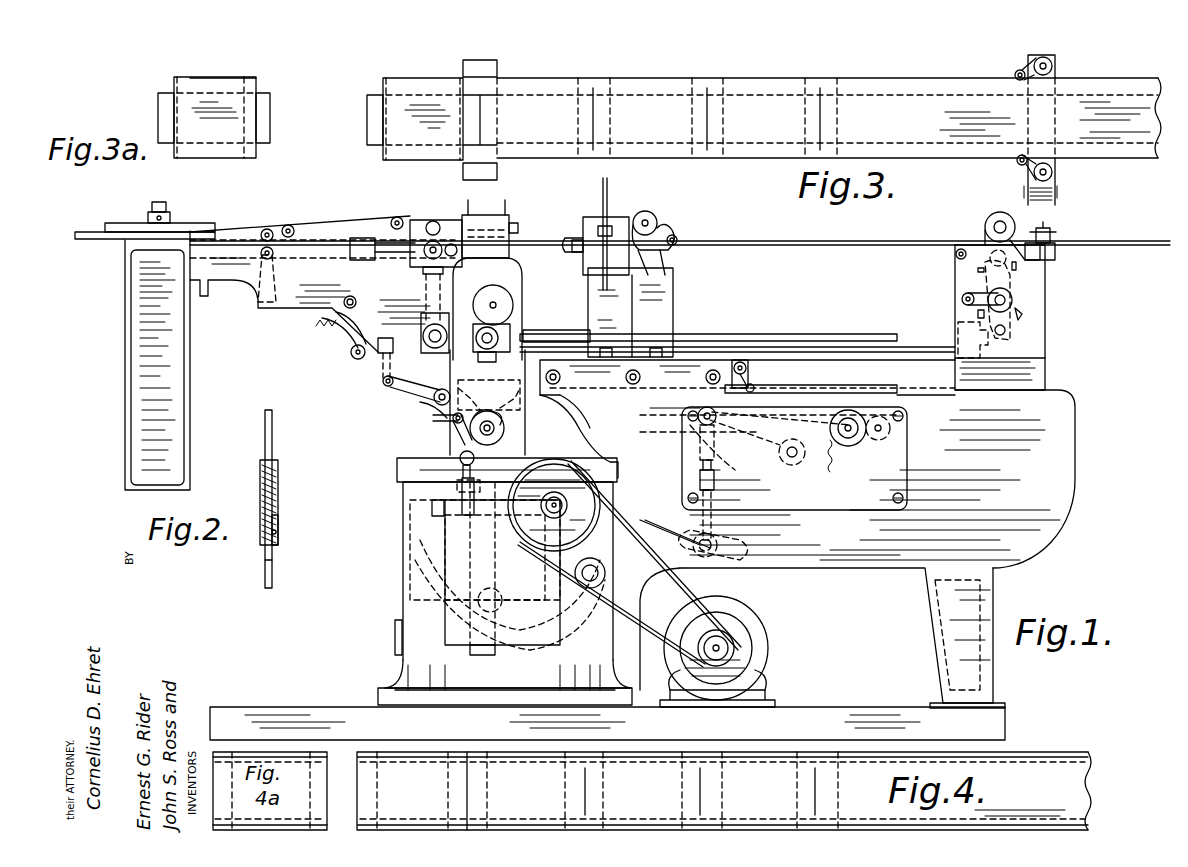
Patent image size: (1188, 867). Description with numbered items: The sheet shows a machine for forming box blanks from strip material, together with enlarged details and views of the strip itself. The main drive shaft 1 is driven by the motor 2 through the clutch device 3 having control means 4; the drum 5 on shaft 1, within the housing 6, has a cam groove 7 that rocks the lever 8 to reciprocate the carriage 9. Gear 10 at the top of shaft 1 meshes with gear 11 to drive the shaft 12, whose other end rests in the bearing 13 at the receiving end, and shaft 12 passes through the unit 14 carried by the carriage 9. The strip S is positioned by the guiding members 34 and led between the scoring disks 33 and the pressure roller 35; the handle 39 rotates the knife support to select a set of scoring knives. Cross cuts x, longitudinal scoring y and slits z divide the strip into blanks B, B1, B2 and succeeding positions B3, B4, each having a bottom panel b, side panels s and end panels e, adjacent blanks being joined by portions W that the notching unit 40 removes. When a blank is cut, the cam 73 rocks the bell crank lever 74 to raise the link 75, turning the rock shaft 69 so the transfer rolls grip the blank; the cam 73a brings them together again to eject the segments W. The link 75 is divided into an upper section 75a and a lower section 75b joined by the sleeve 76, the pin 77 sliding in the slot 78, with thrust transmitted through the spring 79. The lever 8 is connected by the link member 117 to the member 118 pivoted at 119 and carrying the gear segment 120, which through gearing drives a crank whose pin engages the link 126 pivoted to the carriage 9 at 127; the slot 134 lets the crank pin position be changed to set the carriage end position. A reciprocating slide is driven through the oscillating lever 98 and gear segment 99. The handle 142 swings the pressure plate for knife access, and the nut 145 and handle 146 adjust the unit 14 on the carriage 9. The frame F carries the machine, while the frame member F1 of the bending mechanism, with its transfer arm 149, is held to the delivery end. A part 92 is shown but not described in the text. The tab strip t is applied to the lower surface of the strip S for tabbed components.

In FIG. 1, the main drive shaft 1 is at (452, 468).
In FIG. 1, the motor 2 is at (760, 640).
In FIG. 1, the clutch device 3 is at (583, 520).
In FIG. 1, the control means 4 is at (462, 456).
In FIG. 1, the drum 5 is at (440, 530).
In FIG. 1, the housing 6 is at (420, 640).
In FIG. 1, the cam groove 7 is at (428, 567).
In FIG. 1, the lever 8 is at (705, 560).
In FIG. 1, the carriage 9 is at (700, 360).
In FIG. 1, the gear 10 is at (522, 336).
In FIG. 1, the gear 11 is at (500, 330).
In FIG. 1, the shaft 12 is at (805, 334).
In FIG. 1, the bearing 13 is at (958, 340).
In FIG. 1, the unit 14 is at (673, 300).
In FIG. 1, the disks 33 is at (990, 250).
In FIG. 3, the guiding members 34 is at (1014, 70).
In FIG. 1, the guiding members 34 is at (1056, 238).
In FIG. 1, the pressure roller 35 is at (985, 225).
In FIG. 1, the handle 39 is at (972, 300).
In FIG. 1, the unit 40 is at (515, 278).
In FIG. 1, the rock shaft 69 is at (433, 226).
In FIG. 1, the cam 73 is at (495, 440).
In FIG. 1, the cam 73a is at (505, 420).
In FIG. 1, the bell crank lever 74 is at (450, 423).
In FIG. 1, the link member 75 is at (415, 412).
In FIG. 2, the upper section 75a is at (272, 420).
In FIG. 2, the lower section 75b is at (272, 568).
In FIG. 2, the sleeve 76 is at (278, 502).
In FIG. 2, the pin 77 is at (276, 536).
In FIG. 2, the slot 78 is at (278, 522).
In FIG. 2, the spring 79 is at (278, 478).
In FIG. 1, the arm 92 is at (300, 255).
In FIG. 1, the oscillating lever 98 is at (378, 394).
In FIG. 1, the gear segment 99 is at (340, 328).
In FIG. 1, the link member 117 is at (714, 497).
In FIG. 1, the member 118 is at (760, 448).
In FIG. 1, the pivot 119 is at (792, 458).
In FIG. 1, the gear segment 120 is at (832, 462).
In FIG. 1, the link 126 is at (648, 430).
In FIG. 1, the pivot 127 is at (572, 412).
In FIG. 1, the slot 134 is at (810, 410).
In FIG. 1, the handle 142 is at (677, 234).
In FIG. 1, the nut 145 is at (655, 328).
In FIG. 1, the handle 146 is at (753, 380).
In FIG. 1, the transfer arm 149 is at (100, 239).
In FIG. 1, the frame F is at (1062, 488).
In FIG. 1, the frame member F1 is at (140, 350).
In FIG. 1, the strip S is at (510, 245).
In FIG. 3, the continuous portion W is at (497, 68).
In FIG. 3A, the side panels s is at (212, 82).
In FIG. 3, the side panels s is at (760, 78).
In FIG. 4, the side panels s is at (1090, 780).
In FIG. 3A, the cross-cut lines x is at (176, 104).
In FIG. 3, the cross-cut lines x is at (578, 133).
In FIG. 4, the cross-cut lines x is at (440, 782).
In FIG. 3A, the longitudinal scoring y is at (240, 93).
In FIG. 3, the longitudinal scoring y is at (905, 97).
In FIG. 3, the slit z is at (480, 120).
In FIG. 4, the slit z is at (586, 775).
In FIG. 3A, the end panels e is at (160, 108).
In FIG. 3, the end panels e is at (762, 126).
In FIG. 3A, the bottom panel b is at (210, 118).
In FIG. 3, the bottom panel b is at (765, 113).
In FIG. 4A, the tab strip t is at (327, 754).
In FIG. 3A, the blank B is at (228, 158).
In FIG. 3, the blank B1 is at (395, 160).
In FIG. 3, the blank B2 is at (535, 140).
In FIG. 3, the blank B3 is at (640, 140).
In FIG. 3, the blank B4 is at (755, 140).